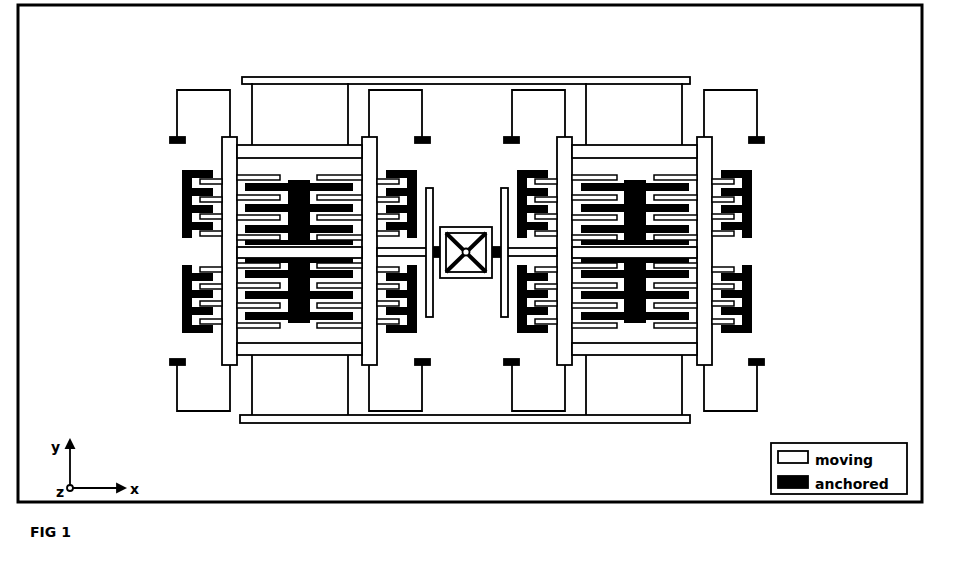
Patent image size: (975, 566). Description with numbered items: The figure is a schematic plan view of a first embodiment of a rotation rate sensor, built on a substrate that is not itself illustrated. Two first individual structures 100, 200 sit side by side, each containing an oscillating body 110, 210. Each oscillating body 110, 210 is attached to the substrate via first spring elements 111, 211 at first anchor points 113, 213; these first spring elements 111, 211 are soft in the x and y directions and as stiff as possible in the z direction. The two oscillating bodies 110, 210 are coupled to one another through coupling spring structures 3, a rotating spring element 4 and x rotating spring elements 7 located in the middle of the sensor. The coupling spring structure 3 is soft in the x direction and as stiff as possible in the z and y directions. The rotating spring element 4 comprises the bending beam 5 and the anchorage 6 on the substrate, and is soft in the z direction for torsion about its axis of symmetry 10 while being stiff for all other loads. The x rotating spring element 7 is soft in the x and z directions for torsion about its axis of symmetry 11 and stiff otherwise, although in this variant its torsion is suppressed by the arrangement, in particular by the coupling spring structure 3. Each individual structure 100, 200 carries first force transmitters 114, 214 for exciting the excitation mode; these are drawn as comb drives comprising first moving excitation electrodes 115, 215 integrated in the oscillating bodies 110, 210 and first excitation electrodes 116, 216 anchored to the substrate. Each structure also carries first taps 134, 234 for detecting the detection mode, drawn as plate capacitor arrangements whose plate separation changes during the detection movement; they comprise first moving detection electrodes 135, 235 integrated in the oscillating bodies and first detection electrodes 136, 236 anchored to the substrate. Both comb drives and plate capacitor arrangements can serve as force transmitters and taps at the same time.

The coupling spring structure 3 is at (585, 112).
The rotating spring element 4 is at (455, 226).
The bending beam 5 is at (457, 237).
The anchorage 6 is at (466, 250).
The x rotating spring element 7 is at (508, 190).
The axis of symmetry 10 is at (463, 275).
The axis of symmetry 11 is at (500, 314).
The first individual structure 100 is at (142, 91).
The oscillating body 110 is at (290, 152).
The first spring element 111 is at (369, 112).
The first anchor point 113 is at (173, 138).
The first force transmitter 114 is at (177, 173).
The first moving excitation electrode 115 is at (178, 193).
The first excitation electrode 116 is at (181, 221).
The first tap 134 is at (240, 257).
The first moving detection electrode 135 is at (238, 268).
The first detection electrode 136 is at (232, 286).
The first individual structure 200 is at (792, 95).
The oscillating body 210 is at (651, 150).
The first spring element 211 is at (564, 112).
The first anchor point 213 is at (762, 142).
The first force transmitter 214 is at (755, 175).
The first moving excitation electrode 215 is at (757, 192).
The first excitation electrode 216 is at (754, 221).
The first tap 234 is at (694, 257).
The first moving detection electrode 235 is at (696, 268).
The first detection electrode 236 is at (702, 286).